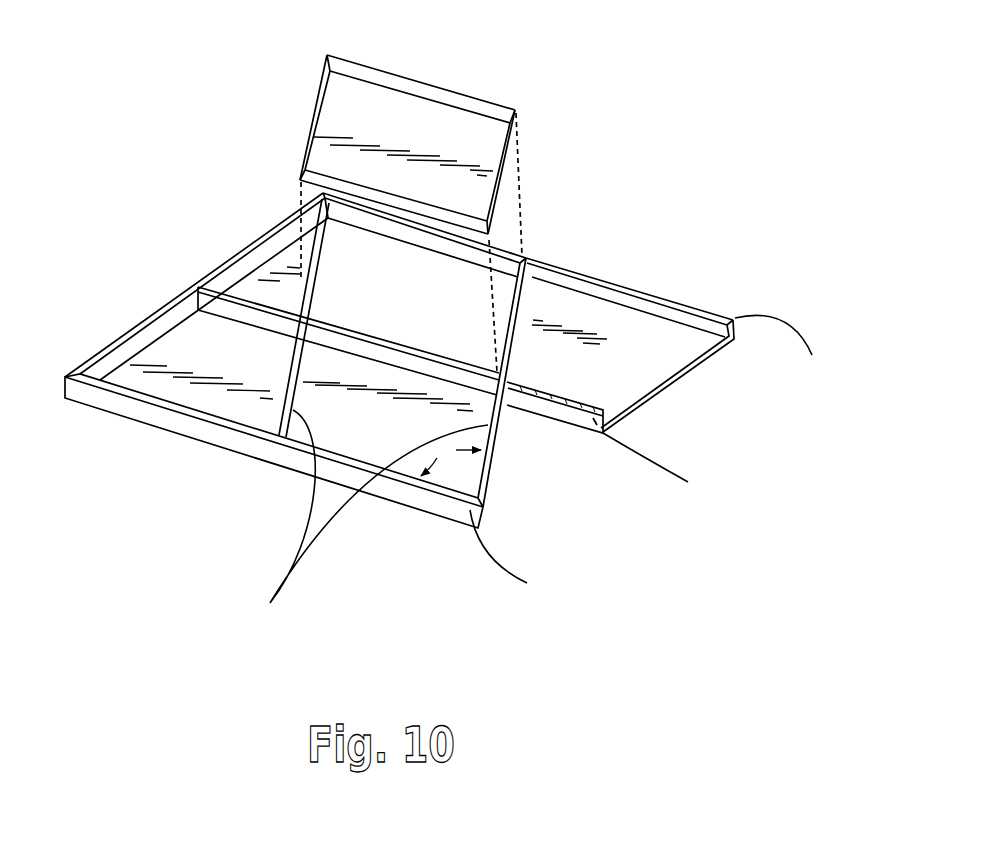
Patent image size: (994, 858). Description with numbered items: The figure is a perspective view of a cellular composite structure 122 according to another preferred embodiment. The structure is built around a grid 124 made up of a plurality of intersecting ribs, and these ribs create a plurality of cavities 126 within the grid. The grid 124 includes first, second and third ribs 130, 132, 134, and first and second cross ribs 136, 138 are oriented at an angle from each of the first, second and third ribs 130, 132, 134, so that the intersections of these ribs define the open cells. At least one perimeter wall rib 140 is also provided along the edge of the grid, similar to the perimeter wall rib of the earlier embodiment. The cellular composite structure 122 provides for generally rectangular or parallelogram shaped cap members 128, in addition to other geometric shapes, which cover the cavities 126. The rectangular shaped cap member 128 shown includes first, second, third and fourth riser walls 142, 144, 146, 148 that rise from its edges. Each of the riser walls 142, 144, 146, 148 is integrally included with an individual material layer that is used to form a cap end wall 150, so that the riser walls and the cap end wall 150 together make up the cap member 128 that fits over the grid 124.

The cellular composite structure 122 is at (623, 112).
The grid 124 is at (627, 283).
The cavities 126 is at (410, 321).
The cap member 128 is at (490, 100).
The first rib 130 is at (677, 302).
The second rib 132 is at (570, 405).
The third rib 134 is at (438, 490).
The first cross rib 136 is at (490, 474).
The second cross rib 138 is at (293, 245).
The perimeter wall rib 140 is at (118, 338).
The first riser wall 142 is at (425, 93).
The second riser wall 144 is at (498, 178).
The third riser wall 146 is at (337, 177).
The fourth riser wall 148 is at (317, 110).
The cap end wall 150 is at (368, 97).